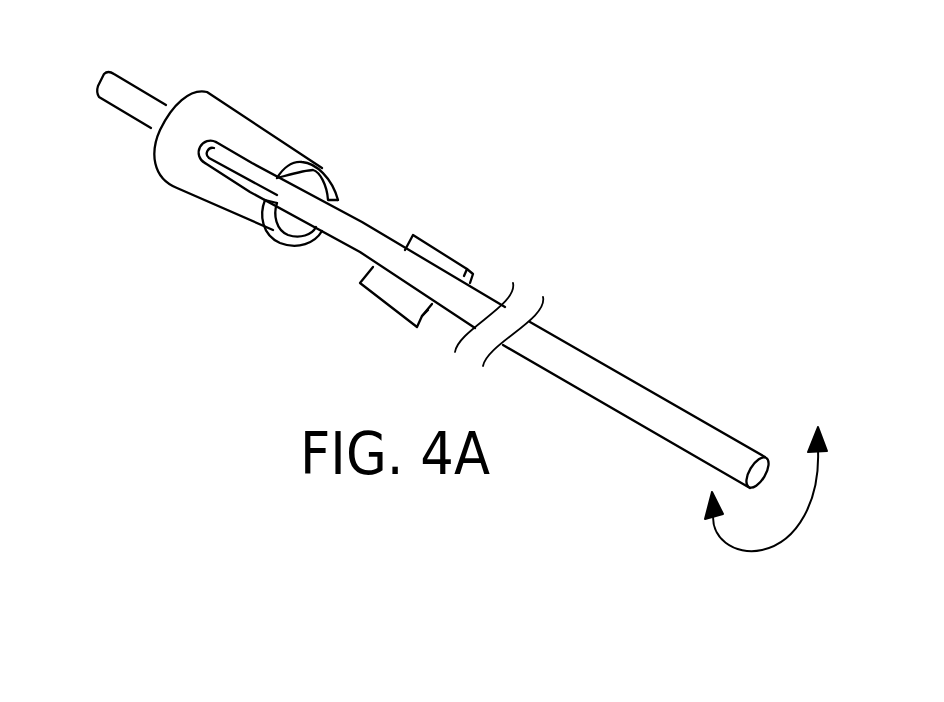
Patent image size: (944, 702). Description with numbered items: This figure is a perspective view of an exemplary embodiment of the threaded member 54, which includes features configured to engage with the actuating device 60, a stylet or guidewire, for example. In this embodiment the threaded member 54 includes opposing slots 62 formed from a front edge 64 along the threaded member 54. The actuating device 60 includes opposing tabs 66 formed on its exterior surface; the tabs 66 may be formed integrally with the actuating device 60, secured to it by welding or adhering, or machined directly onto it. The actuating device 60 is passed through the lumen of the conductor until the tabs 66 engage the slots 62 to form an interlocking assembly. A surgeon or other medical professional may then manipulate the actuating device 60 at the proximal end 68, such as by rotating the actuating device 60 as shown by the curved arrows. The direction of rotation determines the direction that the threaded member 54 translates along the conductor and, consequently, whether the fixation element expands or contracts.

The threaded member 54 is at (207, 113).
The actuating device 60 is at (99, 91).
The opposing slots 62 is at (338, 200).
The front edge 64 is at (318, 170).
The opposing tabs 66 is at (443, 250).
The proximal end 68 is at (752, 410).